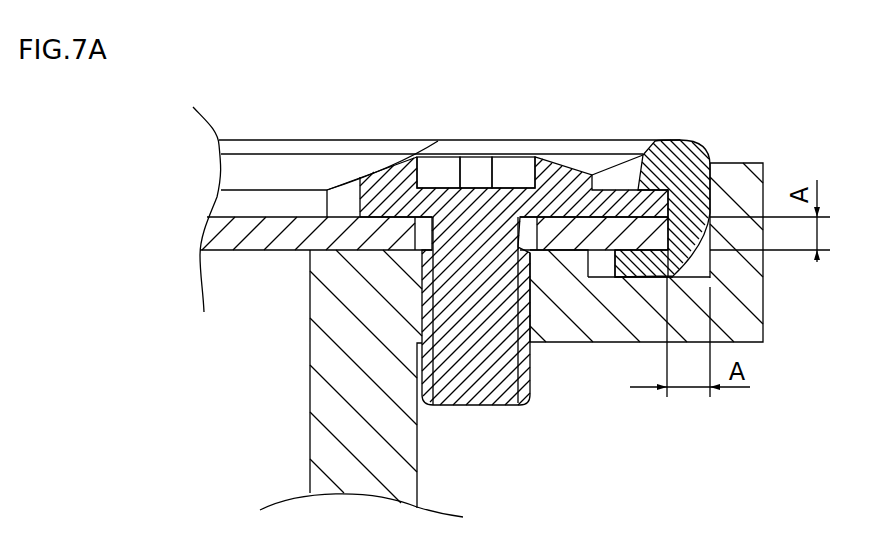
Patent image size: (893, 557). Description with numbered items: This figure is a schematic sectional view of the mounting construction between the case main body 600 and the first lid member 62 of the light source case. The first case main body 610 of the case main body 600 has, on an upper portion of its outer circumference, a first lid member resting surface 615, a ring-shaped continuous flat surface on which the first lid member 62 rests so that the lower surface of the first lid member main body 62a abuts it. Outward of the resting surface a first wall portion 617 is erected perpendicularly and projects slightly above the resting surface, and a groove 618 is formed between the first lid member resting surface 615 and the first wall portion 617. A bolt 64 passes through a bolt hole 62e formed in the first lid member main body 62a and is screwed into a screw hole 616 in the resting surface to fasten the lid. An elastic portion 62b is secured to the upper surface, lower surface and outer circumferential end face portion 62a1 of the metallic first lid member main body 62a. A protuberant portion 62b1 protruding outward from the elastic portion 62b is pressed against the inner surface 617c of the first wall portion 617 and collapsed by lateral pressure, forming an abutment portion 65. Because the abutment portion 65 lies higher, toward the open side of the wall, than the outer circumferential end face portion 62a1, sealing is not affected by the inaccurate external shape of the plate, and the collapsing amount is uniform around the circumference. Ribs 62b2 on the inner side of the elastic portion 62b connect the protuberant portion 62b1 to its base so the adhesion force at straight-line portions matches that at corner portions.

The first lid member 62 is at (474, 120).
The first lid member main body 62a is at (270, 227).
The outer circumferential end face portion 62a1 is at (680, 242).
The elastic portion 62b is at (636, 133).
The protuberant portion 62b1 is at (687, 152).
The rib 62b2 is at (617, 177).
The bolt hole 62e is at (421, 227).
The bolt 64 is at (442, 167).
The abutment portion 65 is at (721, 167).
The case main body 600 is at (394, 383).
The first case main body 610 is at (407, 442).
The first lid member resting surface 615 is at (353, 247).
The screw hole 616 is at (531, 314).
The first wall portion 617 is at (753, 202).
The inner surface of the first wall portion 617c is at (697, 280).
The groove 618 is at (645, 278).